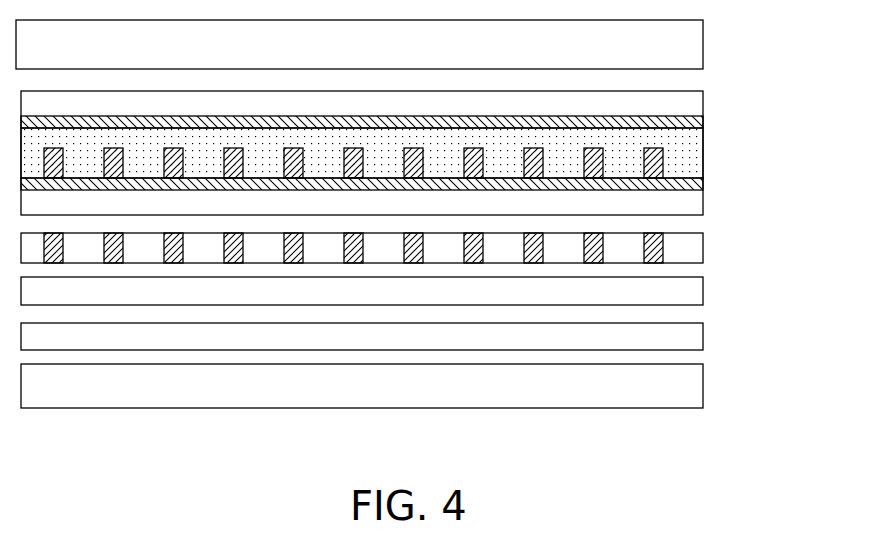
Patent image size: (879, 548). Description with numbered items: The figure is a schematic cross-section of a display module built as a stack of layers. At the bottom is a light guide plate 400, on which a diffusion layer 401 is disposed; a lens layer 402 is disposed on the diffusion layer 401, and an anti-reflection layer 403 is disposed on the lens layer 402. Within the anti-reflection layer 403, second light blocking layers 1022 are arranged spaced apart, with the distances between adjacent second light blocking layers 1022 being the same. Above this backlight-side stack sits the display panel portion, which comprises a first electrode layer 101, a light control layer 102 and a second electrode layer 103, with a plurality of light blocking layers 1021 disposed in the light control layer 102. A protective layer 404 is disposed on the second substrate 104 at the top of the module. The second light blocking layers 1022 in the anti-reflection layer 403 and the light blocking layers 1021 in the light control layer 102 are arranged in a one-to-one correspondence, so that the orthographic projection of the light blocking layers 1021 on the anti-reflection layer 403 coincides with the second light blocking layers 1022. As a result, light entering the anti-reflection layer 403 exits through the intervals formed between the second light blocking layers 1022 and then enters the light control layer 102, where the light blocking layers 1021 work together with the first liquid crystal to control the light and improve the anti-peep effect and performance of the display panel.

The protective layer 404 is at (703, 43).
The second substrate 104 is at (703, 92).
The second electrode layer 103 is at (703, 119).
The light blocking layers 1021 is at (652, 149).
The light control layer 102 is at (703, 168).
The first electrode layer 101 is at (703, 185).
The second light blocking layers 1022 is at (656, 240).
The anti-reflection layer 403 is at (703, 257).
The lens layer 402 is at (703, 291).
The diffusion layer 401 is at (703, 337).
The light guide plate 400 is at (703, 401).